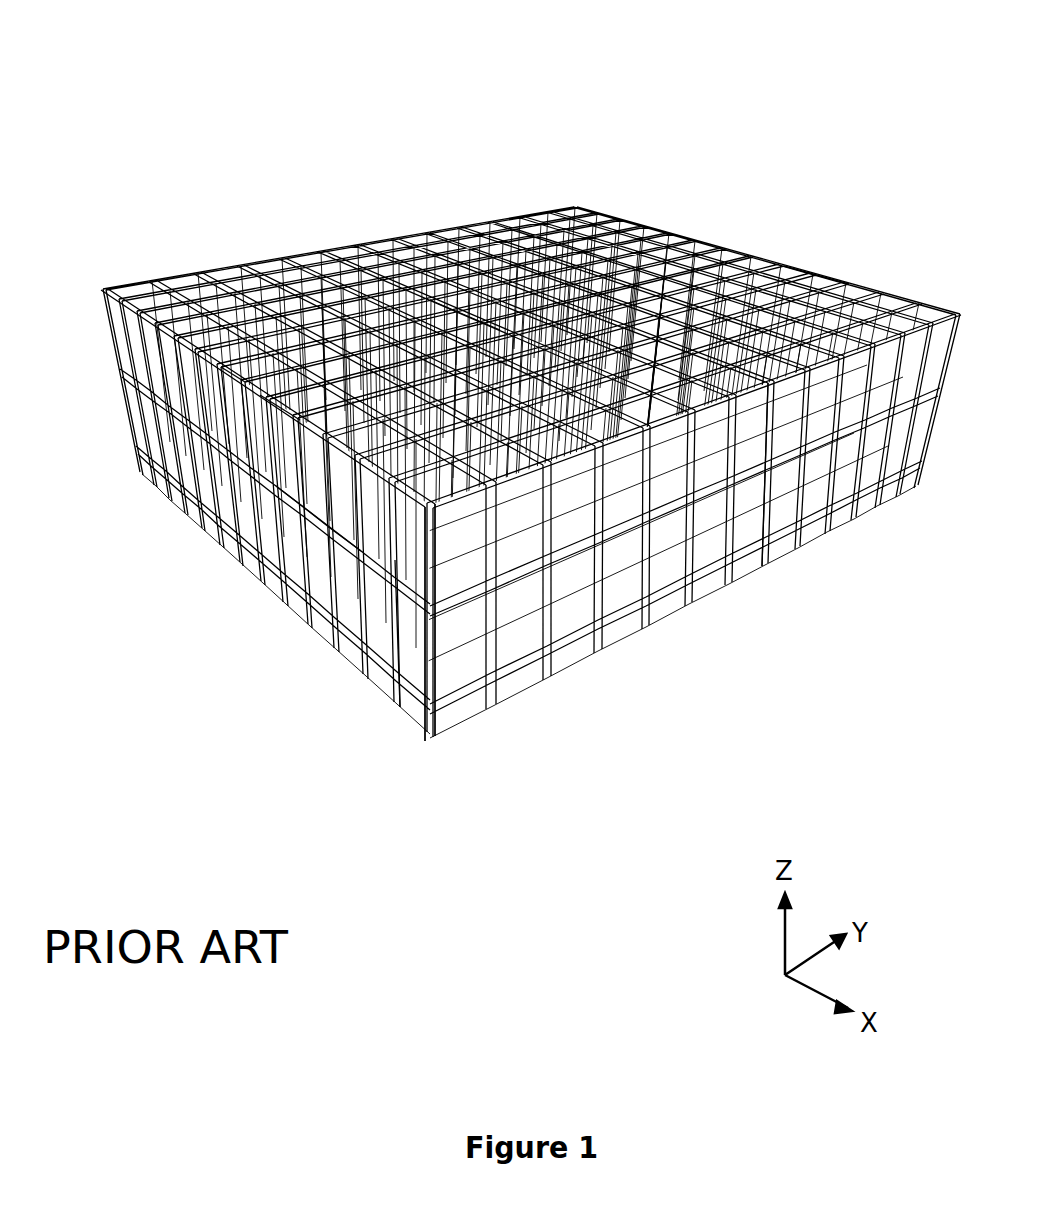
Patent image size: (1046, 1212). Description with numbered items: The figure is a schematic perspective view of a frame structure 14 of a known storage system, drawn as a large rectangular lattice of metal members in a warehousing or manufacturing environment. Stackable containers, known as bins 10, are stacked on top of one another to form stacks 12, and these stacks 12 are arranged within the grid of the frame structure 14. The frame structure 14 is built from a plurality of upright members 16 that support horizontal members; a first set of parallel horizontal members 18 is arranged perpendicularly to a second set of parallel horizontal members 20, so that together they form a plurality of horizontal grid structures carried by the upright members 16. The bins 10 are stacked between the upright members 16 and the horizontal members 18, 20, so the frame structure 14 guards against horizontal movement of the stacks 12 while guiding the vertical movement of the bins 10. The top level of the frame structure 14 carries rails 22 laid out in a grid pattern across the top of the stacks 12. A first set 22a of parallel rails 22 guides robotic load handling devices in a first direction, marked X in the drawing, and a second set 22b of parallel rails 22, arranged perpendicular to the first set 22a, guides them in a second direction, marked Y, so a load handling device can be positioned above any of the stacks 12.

The bins 10 is at (580, 492).
The stacks 12 is at (457, 677).
The frame structure 14 is at (810, 262).
The upright members 16 is at (392, 628).
The first set of parallel horizontal members 18 is at (767, 470).
The second set of parallel horizontal members 20 is at (312, 533).
The rails 22 is at (468, 325).
The first set of parallel rails 22a is at (285, 388).
The second set of parallel rails 22b is at (258, 365).